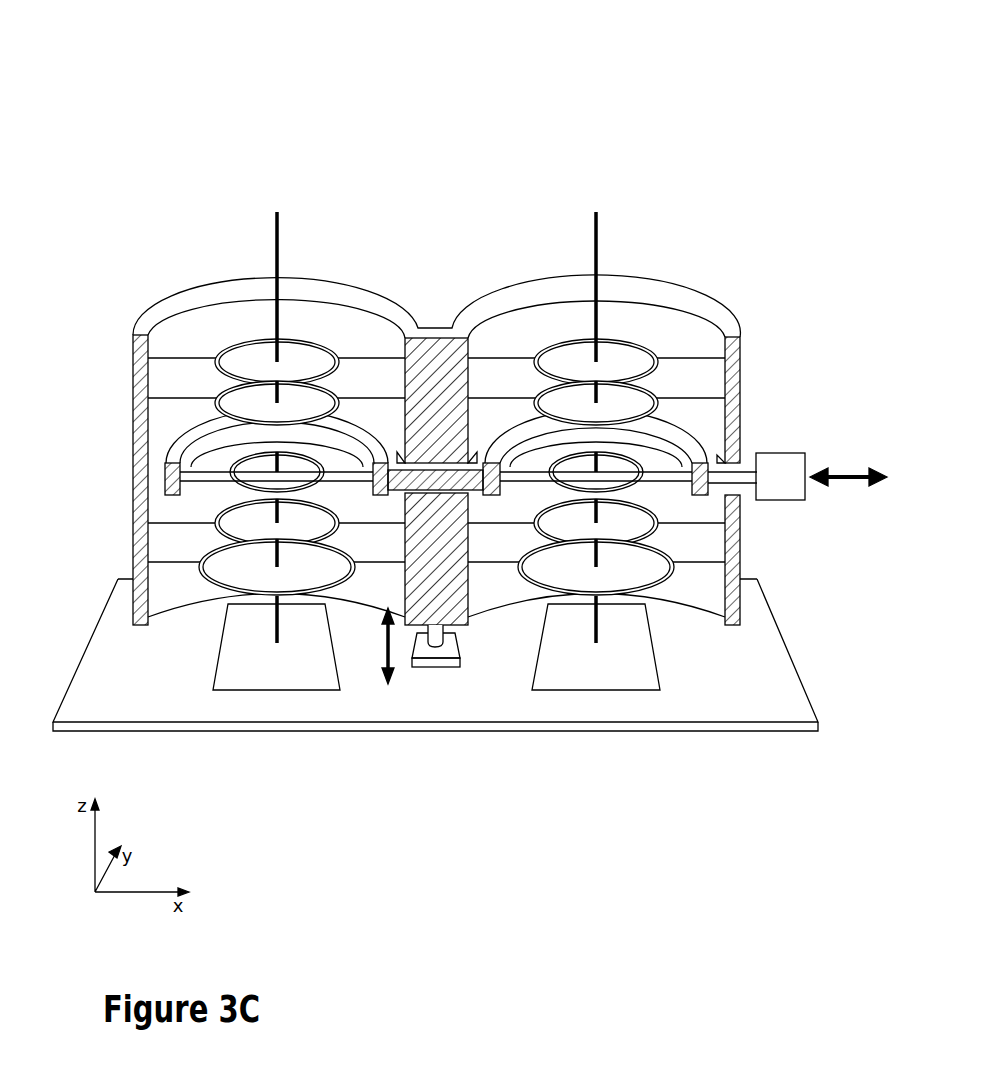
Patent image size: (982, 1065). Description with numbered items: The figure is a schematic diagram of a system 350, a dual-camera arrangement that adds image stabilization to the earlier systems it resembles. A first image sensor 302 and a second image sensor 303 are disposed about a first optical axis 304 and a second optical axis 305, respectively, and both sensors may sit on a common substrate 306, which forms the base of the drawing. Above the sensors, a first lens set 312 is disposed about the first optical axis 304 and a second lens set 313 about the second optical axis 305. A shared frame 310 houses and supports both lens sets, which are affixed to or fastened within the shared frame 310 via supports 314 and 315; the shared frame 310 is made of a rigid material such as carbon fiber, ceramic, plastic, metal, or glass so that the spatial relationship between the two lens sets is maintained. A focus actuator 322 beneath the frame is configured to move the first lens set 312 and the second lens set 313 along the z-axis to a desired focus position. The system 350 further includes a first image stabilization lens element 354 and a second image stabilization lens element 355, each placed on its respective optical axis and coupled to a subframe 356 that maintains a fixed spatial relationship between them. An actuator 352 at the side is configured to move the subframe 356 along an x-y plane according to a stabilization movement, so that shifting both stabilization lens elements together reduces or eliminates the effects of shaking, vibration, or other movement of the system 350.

The system 350 is at (437, 76).
The first optical axis 304 is at (275, 220).
The second optical axis 305 is at (593, 220).
The shared frame 310 is at (133, 363).
The first lens set 312 is at (237, 505).
The second lens set 313 is at (658, 515).
The support 314 is at (157, 527).
The support 315 is at (703, 527).
The first image sensor 302 is at (262, 690).
The second image sensor 303 is at (585, 690).
The common substrate 306 is at (342, 735).
The focus actuator 322 is at (437, 667).
The actuator 352 is at (805, 453).
The first image stabilization lens element 354 is at (237, 463).
The second image stabilization lens element 355 is at (628, 460).
The subframe 356 is at (688, 430).